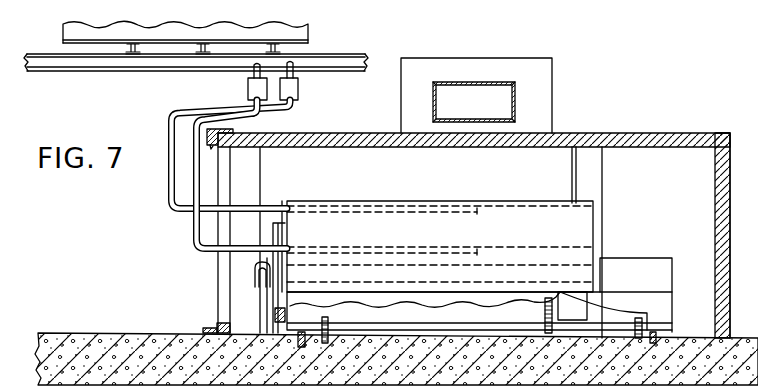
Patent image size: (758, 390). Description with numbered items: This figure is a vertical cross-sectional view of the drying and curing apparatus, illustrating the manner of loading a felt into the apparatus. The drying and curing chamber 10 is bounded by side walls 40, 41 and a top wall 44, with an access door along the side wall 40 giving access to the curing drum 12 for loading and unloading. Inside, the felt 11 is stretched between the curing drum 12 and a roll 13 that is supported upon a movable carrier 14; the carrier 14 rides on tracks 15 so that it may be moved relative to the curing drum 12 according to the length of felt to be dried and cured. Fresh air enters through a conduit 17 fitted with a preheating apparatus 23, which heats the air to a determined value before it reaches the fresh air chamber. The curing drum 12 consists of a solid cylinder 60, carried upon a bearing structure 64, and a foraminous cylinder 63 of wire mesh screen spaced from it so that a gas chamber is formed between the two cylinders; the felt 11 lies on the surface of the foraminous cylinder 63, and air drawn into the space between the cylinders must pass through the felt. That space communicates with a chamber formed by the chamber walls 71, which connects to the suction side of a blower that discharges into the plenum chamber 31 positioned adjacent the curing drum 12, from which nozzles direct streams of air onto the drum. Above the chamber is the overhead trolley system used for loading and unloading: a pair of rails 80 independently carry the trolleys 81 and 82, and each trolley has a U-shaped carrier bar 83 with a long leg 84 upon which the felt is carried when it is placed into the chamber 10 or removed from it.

The drying and curing chamber 10 is at (725, 134).
The felt 11 is at (529, 203).
The curing drum 12 is at (280, 293).
The roll 13 is at (597, 273).
The movable carrier 14 is at (658, 312).
The tracks 15 is at (302, 330).
The fresh air conduit 17 is at (445, 100).
The preheating apparatus 23 is at (528, 68).
The plenum chamber 31 is at (277, 177).
The side wall 40 is at (222, 317).
The side wall 41 is at (723, 287).
The top wall 44 is at (596, 136).
The solid cylinder 60 is at (597, 240).
The foraminous cylinder 63 is at (277, 315).
The bearing structure 64 is at (260, 260).
The chamber walls 71 is at (612, 180).
The rails 80 is at (118, 72).
The trolley 81 is at (248, 91).
The trolley 82 is at (299, 90).
The U-shaped carrier bar 83 is at (173, 162).
The long leg 84 is at (193, 230).